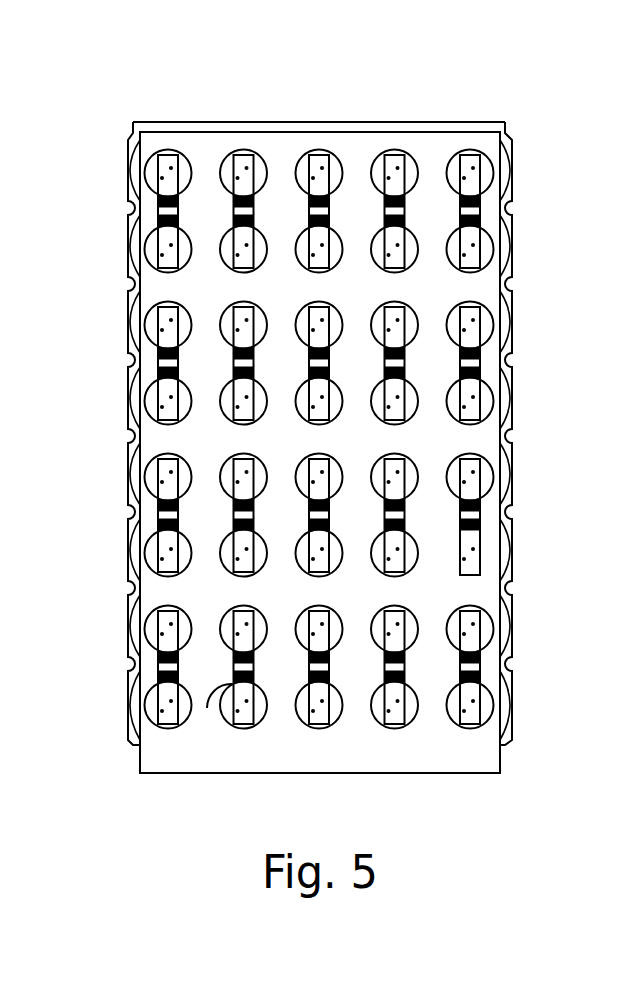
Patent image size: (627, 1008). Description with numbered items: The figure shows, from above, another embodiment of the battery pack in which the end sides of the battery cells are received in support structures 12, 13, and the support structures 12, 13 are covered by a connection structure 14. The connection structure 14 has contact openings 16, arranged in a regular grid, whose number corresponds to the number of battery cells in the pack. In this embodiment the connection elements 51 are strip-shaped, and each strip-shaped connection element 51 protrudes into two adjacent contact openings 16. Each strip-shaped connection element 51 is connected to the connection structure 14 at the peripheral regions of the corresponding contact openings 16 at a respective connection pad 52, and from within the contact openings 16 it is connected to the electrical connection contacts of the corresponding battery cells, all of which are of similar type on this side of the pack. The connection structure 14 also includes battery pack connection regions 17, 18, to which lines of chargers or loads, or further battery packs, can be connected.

The support structure 12 is at (377, 433).
The support structure 13 is at (376, 433).
The connection structure 14 is at (500, 286).
The contact opening 16 is at (486, 177).
The battery pack connection region 17 is at (468, 760).
The battery pack connection region 18 is at (430, 122).
The strip-shaped connection element 51 is at (477, 189).
The connection pad 52 is at (472, 221).